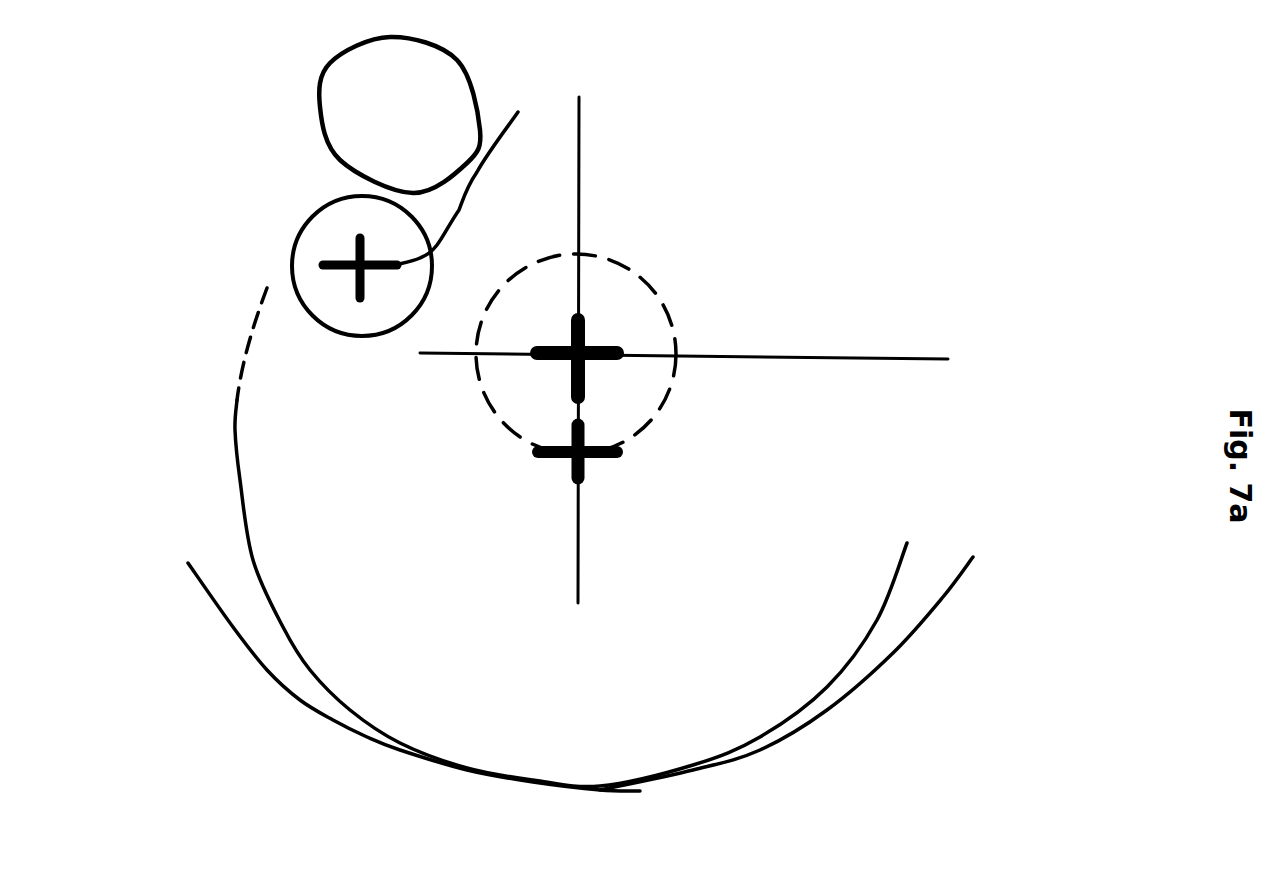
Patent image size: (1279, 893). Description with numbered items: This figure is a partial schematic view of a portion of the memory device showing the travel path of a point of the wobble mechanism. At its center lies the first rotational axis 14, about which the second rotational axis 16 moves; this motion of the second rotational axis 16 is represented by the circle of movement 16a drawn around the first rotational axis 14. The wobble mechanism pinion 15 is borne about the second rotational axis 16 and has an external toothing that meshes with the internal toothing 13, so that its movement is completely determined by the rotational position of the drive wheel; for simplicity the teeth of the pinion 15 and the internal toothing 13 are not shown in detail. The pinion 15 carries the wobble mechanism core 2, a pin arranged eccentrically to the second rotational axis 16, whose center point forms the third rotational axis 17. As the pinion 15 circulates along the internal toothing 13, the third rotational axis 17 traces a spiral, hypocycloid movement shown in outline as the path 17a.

The wobble mechanism core 2 is at (307, 220).
The internal toothing 13 is at (223, 623).
The first rotational axis 14 is at (540, 374).
The wobble mechanism pinion 15 is at (860, 635).
The second rotational axis 16 is at (532, 488).
The circle of movement 16a is at (654, 428).
The third rotational axis 17 is at (322, 287).
The spiral movement of the third rotational axis 17a is at (470, 236).